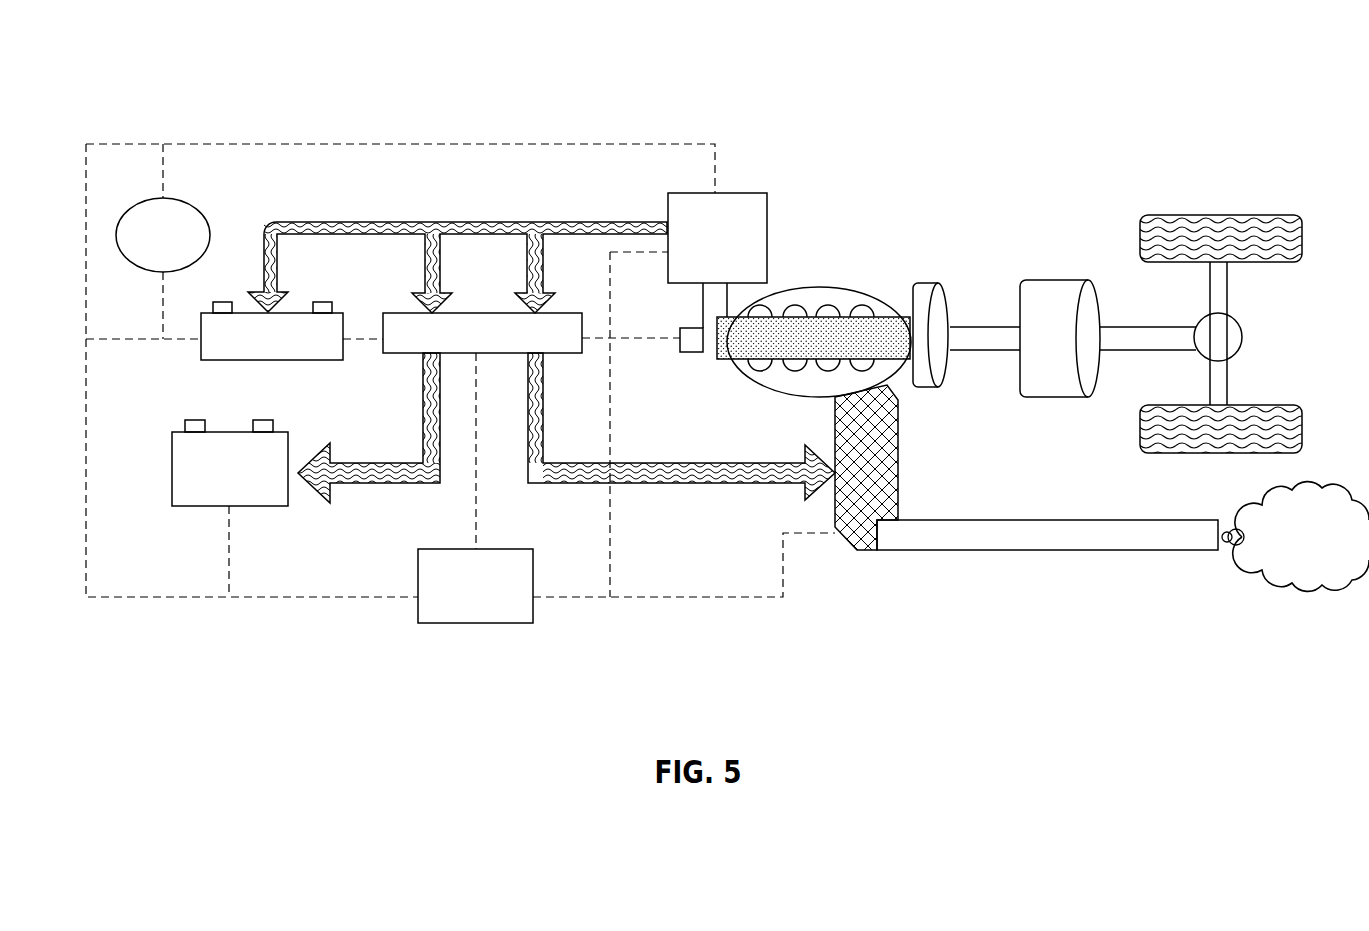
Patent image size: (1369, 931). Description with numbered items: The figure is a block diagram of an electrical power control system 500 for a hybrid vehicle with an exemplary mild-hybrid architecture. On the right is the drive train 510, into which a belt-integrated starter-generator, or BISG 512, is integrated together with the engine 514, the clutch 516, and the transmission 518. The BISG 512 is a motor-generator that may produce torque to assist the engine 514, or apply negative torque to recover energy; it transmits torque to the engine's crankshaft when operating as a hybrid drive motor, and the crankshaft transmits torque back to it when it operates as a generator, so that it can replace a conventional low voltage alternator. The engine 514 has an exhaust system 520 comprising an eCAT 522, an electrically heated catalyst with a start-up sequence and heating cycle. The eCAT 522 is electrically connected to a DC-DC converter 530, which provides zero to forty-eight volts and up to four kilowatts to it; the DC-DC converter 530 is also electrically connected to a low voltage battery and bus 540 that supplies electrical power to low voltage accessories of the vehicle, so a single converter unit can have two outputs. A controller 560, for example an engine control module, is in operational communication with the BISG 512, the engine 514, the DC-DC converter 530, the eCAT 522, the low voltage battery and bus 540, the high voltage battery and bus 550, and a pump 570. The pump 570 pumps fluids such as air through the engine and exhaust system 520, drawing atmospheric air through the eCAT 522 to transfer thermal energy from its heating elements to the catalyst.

The electrical power control system 500 is at (118, 72).
The drive train 510 is at (1298, 110).
The belt-integrated starter-generator (BISG) 512 is at (691, 253).
The engine 514 is at (820, 288).
The clutch 516 is at (940, 288).
The transmission 518 is at (1052, 280).
The exhaust system 520 is at (835, 572).
The eCAT 522 is at (898, 465).
The DC-DC converter 530 is at (456, 347).
The low voltage battery and bus 540 is at (203, 483).
The high voltage battery and bus 550 is at (246, 350).
The controller 560 is at (449, 599).
The pump 570 is at (137, 250).